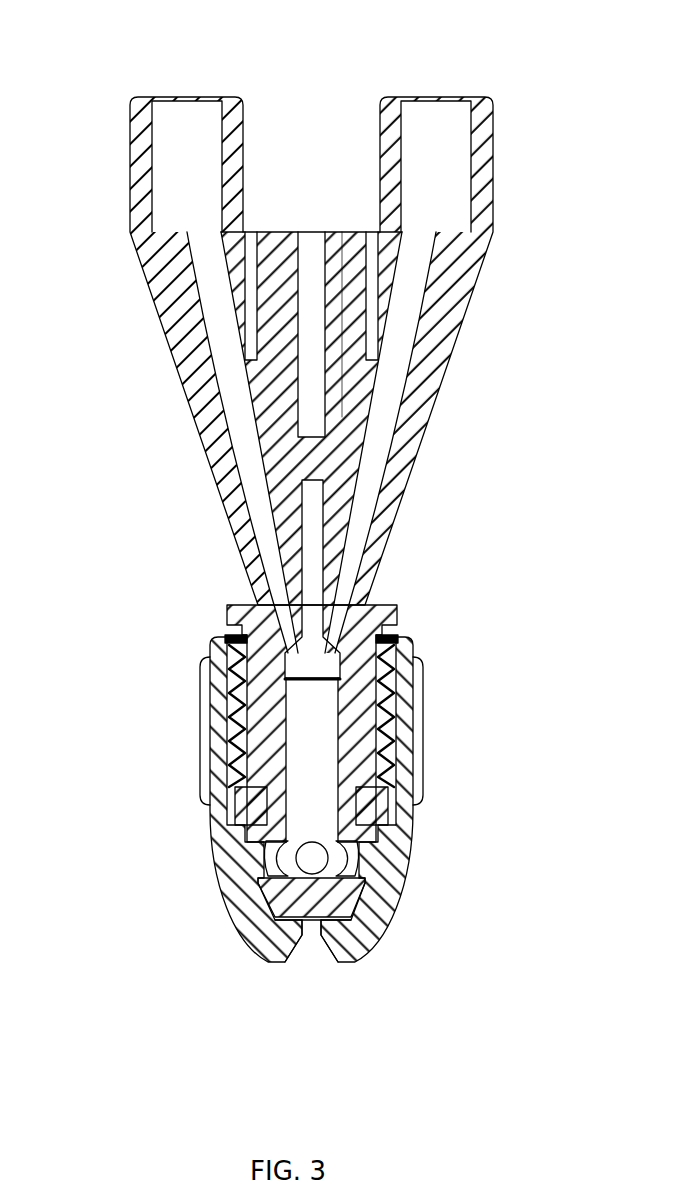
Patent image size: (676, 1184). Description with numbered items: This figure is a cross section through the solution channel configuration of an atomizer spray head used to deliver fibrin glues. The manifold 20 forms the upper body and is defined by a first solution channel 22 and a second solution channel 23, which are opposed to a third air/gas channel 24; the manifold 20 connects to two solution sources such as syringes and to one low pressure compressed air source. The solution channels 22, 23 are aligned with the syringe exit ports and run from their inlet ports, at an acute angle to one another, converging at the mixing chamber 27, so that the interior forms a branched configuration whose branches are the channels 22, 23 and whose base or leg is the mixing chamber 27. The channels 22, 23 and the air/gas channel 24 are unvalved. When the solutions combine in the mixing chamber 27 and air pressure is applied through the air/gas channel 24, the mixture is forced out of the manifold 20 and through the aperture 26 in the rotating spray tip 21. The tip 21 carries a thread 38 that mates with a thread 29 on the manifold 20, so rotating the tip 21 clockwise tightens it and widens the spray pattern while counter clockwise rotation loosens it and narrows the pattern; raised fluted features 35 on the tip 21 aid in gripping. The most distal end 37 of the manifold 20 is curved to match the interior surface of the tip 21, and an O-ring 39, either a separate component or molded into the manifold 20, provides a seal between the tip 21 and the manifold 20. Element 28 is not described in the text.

The manifold 20 is at (462, 305).
The rotating spray tip 21 is at (385, 930).
The first solution channel 22 is at (182, 98).
The second solution channel 23 is at (432, 99).
The air/gas channel 24 is at (290, 572).
The aperture 26 is at (313, 937).
The mixing chamber 27 is at (324, 777).
The check ball 28 is at (292, 857).
The thread on the manifold 29 is at (425, 662).
The raised fluted features 35 is at (198, 768).
The most distal end 37 is at (278, 895).
The thread on the tip 38 is at (398, 634).
The O-ring 39 is at (243, 813).